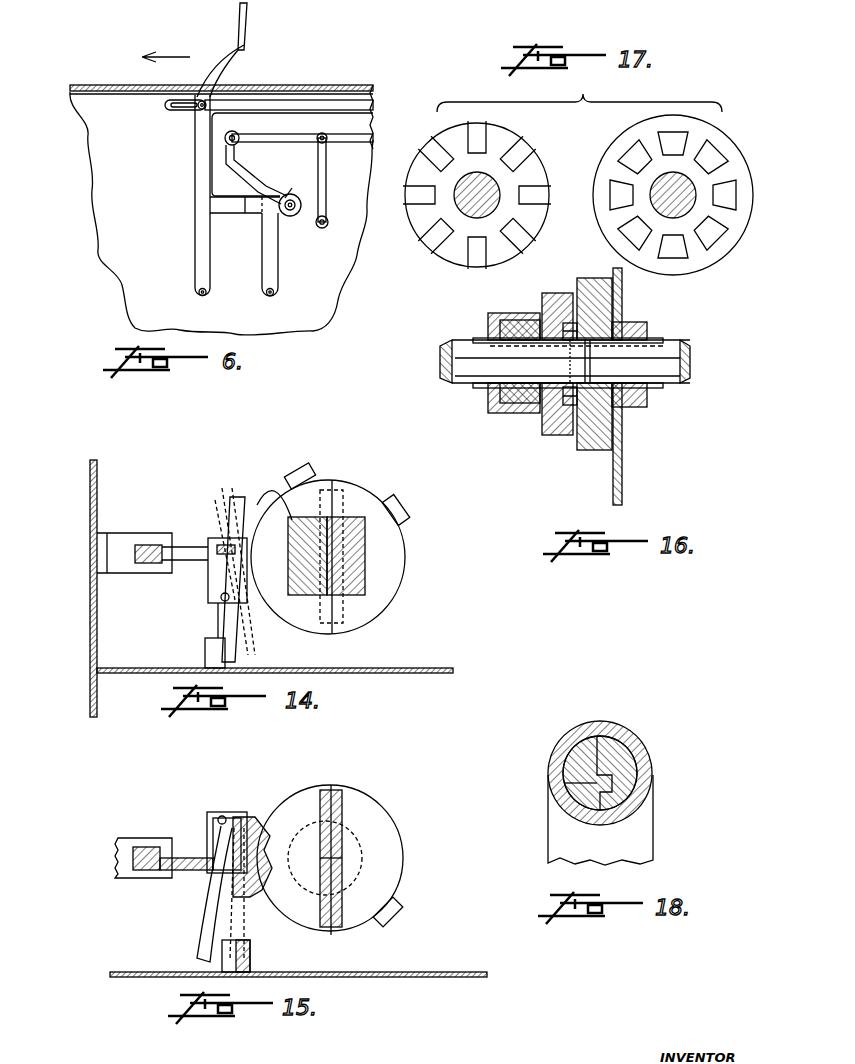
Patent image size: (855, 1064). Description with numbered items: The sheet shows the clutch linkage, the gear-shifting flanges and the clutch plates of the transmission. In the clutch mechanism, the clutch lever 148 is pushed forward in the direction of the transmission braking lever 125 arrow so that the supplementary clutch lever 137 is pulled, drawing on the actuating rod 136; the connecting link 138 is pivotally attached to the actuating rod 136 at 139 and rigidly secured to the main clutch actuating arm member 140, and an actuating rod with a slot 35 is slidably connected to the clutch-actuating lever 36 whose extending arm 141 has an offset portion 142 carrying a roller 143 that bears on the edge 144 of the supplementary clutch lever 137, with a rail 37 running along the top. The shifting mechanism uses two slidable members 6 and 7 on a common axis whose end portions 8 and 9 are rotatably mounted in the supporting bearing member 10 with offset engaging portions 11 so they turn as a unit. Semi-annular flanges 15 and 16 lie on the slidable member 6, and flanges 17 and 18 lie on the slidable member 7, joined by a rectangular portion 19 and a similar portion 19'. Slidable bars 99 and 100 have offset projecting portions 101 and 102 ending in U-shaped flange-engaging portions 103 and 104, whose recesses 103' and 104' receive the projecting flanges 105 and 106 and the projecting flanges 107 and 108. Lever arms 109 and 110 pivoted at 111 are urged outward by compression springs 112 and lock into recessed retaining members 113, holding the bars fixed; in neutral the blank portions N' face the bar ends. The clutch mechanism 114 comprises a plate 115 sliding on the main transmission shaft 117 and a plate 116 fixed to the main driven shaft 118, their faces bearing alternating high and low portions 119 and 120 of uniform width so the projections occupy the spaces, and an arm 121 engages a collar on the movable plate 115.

In FIG. 14, the slidable member 6 is at (358, 518).
In FIG. 15, the slidable member 6 is at (318, 903).
In FIG. 18, the slidable member 6 is at (556, 783).
In FIG. 14, the slidable member 7 is at (290, 537).
In FIG. 15, the slidable member 7 is at (345, 815).
In FIG. 18, the slidable member 7 is at (640, 786).
In FIG. 15, the end portion 8 is at (306, 826).
In FIG. 18, the end portion 8 is at (582, 755).
In FIG. 15, the end portion 9 is at (362, 858).
In FIG. 18, the end portion 9 is at (645, 750).
In FIG. 18, the supporting bearing member 10 is at (620, 729).
In FIG. 18, the offset engaging portions 11 is at (615, 800).
In FIG. 15, the semi-annular flange 15 is at (305, 800).
In FIG. 14, the semi-annular flange 16 is at (388, 565).
In FIG. 15, the semi-annular flange 17 is at (385, 840).
In FIG. 14, the semi-annular flange 18 is at (274, 490).
In FIG. 14, the connecting portion 19 is at (347, 529).
In FIG. 15, the connecting portion 19 is at (359, 841).
In FIG. 14, the connecting portion 19' is at (364, 641).
In FIG. 15, the connecting portion 19' is at (370, 928).
In FIG. 6, the slot 35 is at (183, 108).
In FIG. 6, the clutch-actuating lever 36 is at (203, 150).
In FIG. 6, the rail 37 is at (345, 105).
In FIG. 14, the slidable bar 99 is at (158, 573).
In FIG. 15, the slidable bar 99 is at (160, 876).
In FIG. 14, the slidable bar 100 is at (152, 546).
In FIG. 15, the slidable bar 100 is at (155, 843).
In FIG. 14, the offset projecting portion 101 is at (200, 561).
In FIG. 15, the offset projecting portion 101 is at (196, 871).
In FIG. 14, the offset projecting portion 102 is at (212, 545).
In FIG. 15, the flange-engaging end portion 103 is at (221, 824).
In FIG. 15, the recess 103' is at (200, 831).
In FIG. 14, the flange-engaging end portion 104 is at (210, 545).
In FIG. 14, the recess 104' is at (170, 604).
In FIG. 15, the projecting flange 105 is at (252, 820).
In FIG. 15, the projecting flange 106 is at (400, 912).
In FIG. 14, the projecting flange 107 is at (310, 470).
In FIG. 14, the projecting flange 108 is at (412, 498).
In FIG. 15, the lever arm 109 is at (207, 940).
In FIG. 14, the lever arm 110 is at (228, 620).
In FIG. 14, the pivot 111 is at (222, 600).
In FIG. 15, the pivot 111 is at (228, 815).
In FIG. 14, the compression spring 112 is at (234, 562).
In FIG. 15, the compression spring 112 is at (228, 876).
In FIG. 14, the recessed retaining member 113 is at (206, 653).
In FIG. 15, the recessed retaining member 113 is at (252, 950).
In FIG. 16, the clutch mechanism 114 is at (567, 457).
In FIG. 17, the clutch plate 115 is at (452, 263).
In FIG. 16, the clutch plate 115 is at (546, 437).
In FIG. 17, the clutch plate 116 is at (721, 275).
In FIG. 16, the clutch plate 116 is at (600, 422).
In FIG. 16, the main transmission shaft 117 is at (485, 370).
In FIG. 16, the main driven shaft 118 is at (660, 380).
In FIG. 17, the high projecting portions 119 is at (478, 138).
In FIG. 16, the high projecting portions 119 is at (568, 323).
In FIG. 17, the low portions 120 is at (680, 133).
In FIG. 16, the low portions 120 is at (560, 330).
In FIG. 16, the arm 121 is at (496, 408).
In FIG. 6, the transmission braking lever 125 is at (170, 57).
In FIG. 6, the actuating rod 136 is at (270, 146).
In FIG. 6, the supplementary clutch lever 137 is at (272, 255).
In FIG. 6, the connecting link 138 is at (330, 168).
In FIG. 6, the pivotal attachment 139 is at (322, 134).
In FIG. 6, the main clutch actuating arm member 140 is at (322, 228).
In FIG. 6, the extending arm 141 is at (223, 205).
In FIG. 6, the offset portion 142 is at (258, 208).
In FIG. 6, the roller 143 is at (296, 216).
In FIG. 6, the edge 144 is at (292, 188).
In FIG. 6, the clutch lever 148 is at (246, 44).
In FIG. 14, the blank portions N' is at (303, 650).
In FIG. 15, the blank portions N' is at (301, 954).